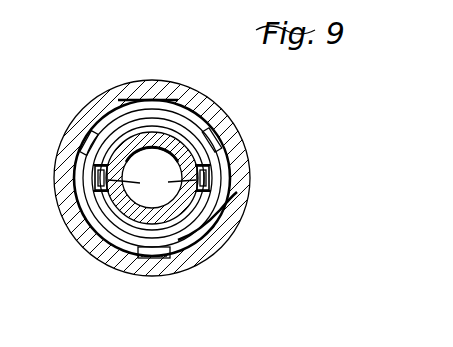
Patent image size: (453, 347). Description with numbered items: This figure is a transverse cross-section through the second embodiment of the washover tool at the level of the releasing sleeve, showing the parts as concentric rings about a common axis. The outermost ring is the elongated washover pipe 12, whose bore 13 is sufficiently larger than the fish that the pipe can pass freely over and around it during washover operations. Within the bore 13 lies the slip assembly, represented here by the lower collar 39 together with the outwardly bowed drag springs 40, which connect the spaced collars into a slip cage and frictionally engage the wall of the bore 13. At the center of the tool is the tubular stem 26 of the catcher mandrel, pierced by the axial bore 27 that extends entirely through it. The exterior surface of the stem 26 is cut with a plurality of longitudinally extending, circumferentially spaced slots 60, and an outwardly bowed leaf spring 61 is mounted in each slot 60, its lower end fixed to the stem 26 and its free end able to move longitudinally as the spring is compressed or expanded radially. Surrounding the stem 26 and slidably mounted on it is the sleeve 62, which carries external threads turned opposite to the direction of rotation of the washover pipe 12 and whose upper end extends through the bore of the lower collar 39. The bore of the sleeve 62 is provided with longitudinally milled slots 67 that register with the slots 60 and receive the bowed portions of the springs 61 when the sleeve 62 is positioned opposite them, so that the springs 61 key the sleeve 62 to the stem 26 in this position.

The washover pipe 12 is at (165, 98).
The bore 13 is at (123, 105).
The tubular stem 26 is at (85, 242).
The axial bore 27 is at (152, 178).
The lower collar 39 is at (212, 230).
The drag springs 40 is at (218, 146).
The slots 60 is at (152, 186).
The leaf spring 61 is at (94, 180).
The sleeve 62 is at (186, 250).
The milled slots 67 is at (208, 183).